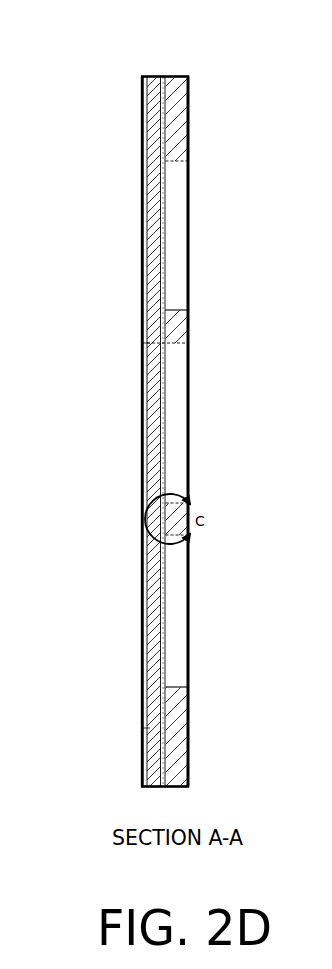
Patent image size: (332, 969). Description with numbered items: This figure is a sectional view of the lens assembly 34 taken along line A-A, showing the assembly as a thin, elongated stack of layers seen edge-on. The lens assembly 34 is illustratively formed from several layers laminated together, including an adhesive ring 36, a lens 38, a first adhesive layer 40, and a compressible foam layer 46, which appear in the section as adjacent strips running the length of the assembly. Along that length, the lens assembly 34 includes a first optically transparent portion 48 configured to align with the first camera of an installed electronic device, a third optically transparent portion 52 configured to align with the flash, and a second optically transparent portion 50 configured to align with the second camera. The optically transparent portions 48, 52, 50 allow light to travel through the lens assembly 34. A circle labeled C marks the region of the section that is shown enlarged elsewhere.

The lens assembly 34 is at (98, 210).
The adhesive ring 36 is at (141, 86).
The lens 38 is at (145, 75).
The first adhesive layer 40 is at (170, 76).
The compressible foam layer 46 is at (186, 100).
The first optically transparent portion 48 is at (204, 230).
The third optically transparent portion 52 is at (208, 422).
The second optically transparent portion 50 is at (207, 622).